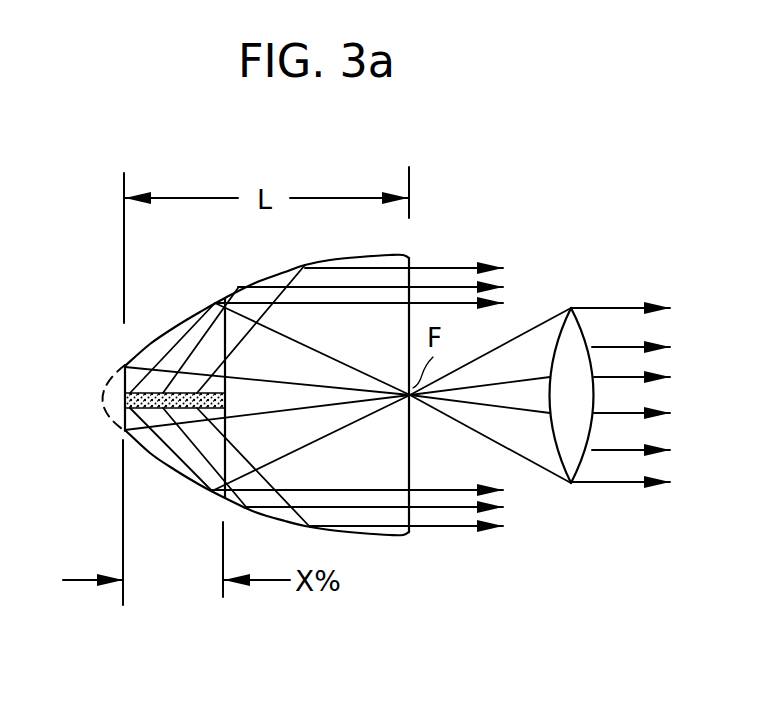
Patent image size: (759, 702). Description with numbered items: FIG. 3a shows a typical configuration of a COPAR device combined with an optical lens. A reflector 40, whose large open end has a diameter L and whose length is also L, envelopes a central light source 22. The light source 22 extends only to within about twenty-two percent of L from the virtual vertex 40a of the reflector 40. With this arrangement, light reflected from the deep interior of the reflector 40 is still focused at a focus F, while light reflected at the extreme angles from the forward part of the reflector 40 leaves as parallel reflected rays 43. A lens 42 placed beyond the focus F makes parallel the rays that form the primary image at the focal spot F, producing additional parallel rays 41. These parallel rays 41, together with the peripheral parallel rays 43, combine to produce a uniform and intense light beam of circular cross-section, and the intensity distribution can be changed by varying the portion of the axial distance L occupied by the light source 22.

The light source 22 is at (152, 412).
The reflector 40 is at (395, 537).
The virtual vertex 40a is at (110, 396).
The parallel rays 41 is at (645, 403).
The lens 42 is at (572, 486).
The parallel reflected rays 43 is at (452, 527).